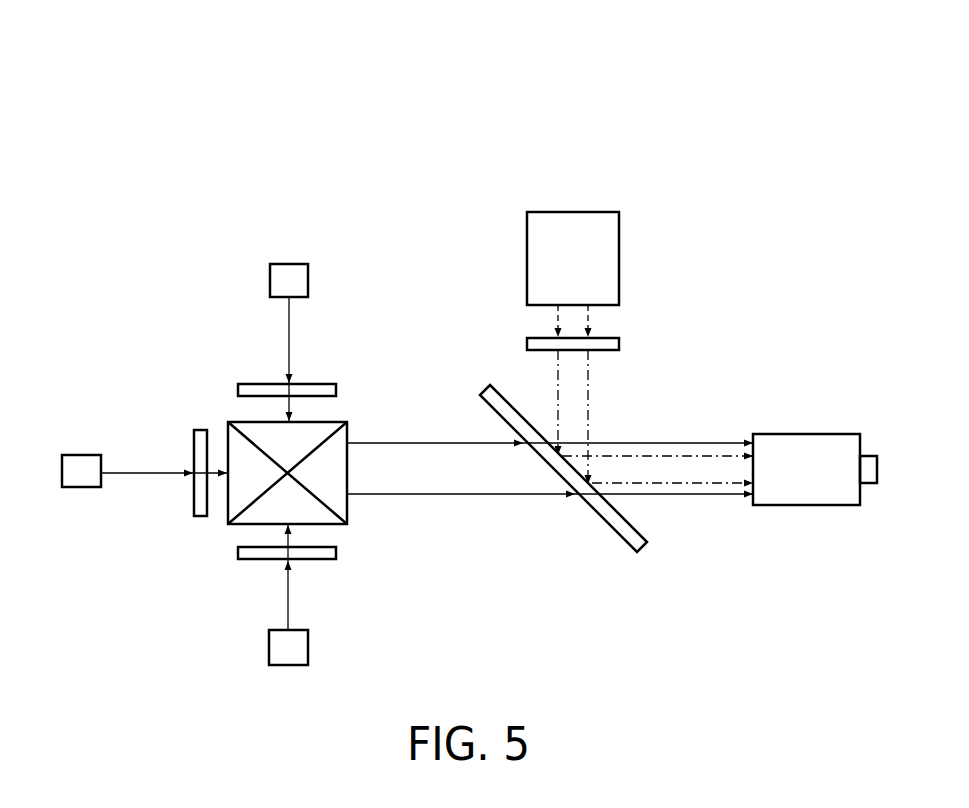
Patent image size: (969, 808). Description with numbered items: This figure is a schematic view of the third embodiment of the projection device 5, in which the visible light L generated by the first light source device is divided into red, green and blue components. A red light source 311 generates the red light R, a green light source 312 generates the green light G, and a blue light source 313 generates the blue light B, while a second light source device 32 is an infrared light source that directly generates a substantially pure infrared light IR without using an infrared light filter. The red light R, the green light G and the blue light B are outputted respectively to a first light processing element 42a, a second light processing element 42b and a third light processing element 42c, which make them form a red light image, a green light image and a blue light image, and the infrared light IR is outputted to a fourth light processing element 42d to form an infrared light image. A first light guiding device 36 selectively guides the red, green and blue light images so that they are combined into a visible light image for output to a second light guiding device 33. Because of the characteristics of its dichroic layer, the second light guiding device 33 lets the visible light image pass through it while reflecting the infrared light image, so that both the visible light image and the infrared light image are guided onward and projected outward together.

The projection device 5 is at (750, 78).
The red light source 311 is at (290, 283).
The green light source 312 is at (87, 472).
The blue light source 313 is at (287, 645).
The second light source device 32 is at (542, 258).
The second light guiding device 33 is at (608, 513).
The first light guiding device 36 is at (322, 477).
The first light processing element 42a is at (300, 390).
The second light processing element 42b is at (198, 493).
The third light processing element 42c is at (302, 552).
The fourth light processing element 42d is at (607, 345).
The red light R is at (288, 344).
The green light G is at (150, 470).
The blue light B is at (287, 612).
The infrared light IR is at (548, 367).
The visible light L is at (492, 498).